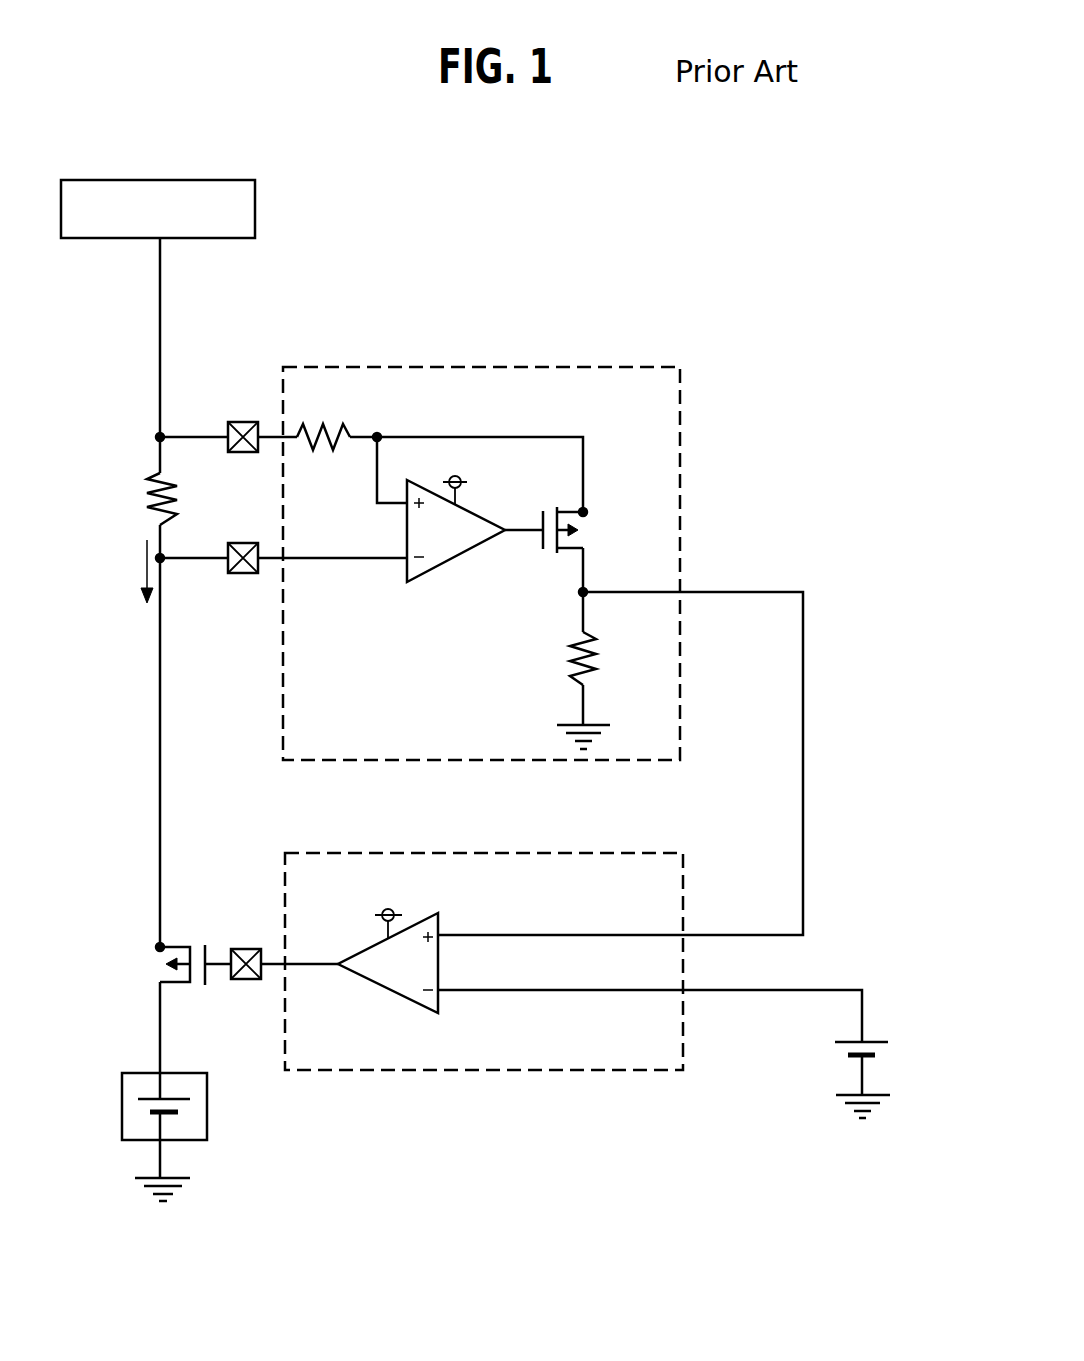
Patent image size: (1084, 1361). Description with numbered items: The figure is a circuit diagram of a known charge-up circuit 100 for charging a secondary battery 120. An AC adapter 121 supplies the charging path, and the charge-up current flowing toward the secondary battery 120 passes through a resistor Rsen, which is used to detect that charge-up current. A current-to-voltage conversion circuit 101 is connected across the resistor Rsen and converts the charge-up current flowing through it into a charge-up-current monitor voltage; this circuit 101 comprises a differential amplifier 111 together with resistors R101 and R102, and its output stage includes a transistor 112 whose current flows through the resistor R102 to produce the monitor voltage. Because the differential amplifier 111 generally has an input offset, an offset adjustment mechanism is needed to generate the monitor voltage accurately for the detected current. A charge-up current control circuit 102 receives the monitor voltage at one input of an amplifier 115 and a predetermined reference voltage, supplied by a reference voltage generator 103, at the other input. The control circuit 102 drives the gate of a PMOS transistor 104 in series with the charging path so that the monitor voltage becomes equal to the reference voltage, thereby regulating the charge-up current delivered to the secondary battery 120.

The charging circuit 100 is at (745, 240).
The current-to-voltage conversion circuit 101 is at (646, 366).
The charge-up current control circuit 102 is at (648, 852).
The reference voltage generator 103 is at (884, 1050).
The PMOS transistor 104 is at (161, 964).
The differential amplifier 111 is at (447, 560).
The transistor 112 is at (585, 530).
The error amplifier 115 is at (396, 994).
The secondary battery 120 is at (209, 1090).
The AC adapter 121 is at (240, 180).
The resistor R101 is at (323, 424).
The resistor R102 is at (559, 658).
The resistor Rsen is at (132, 499).